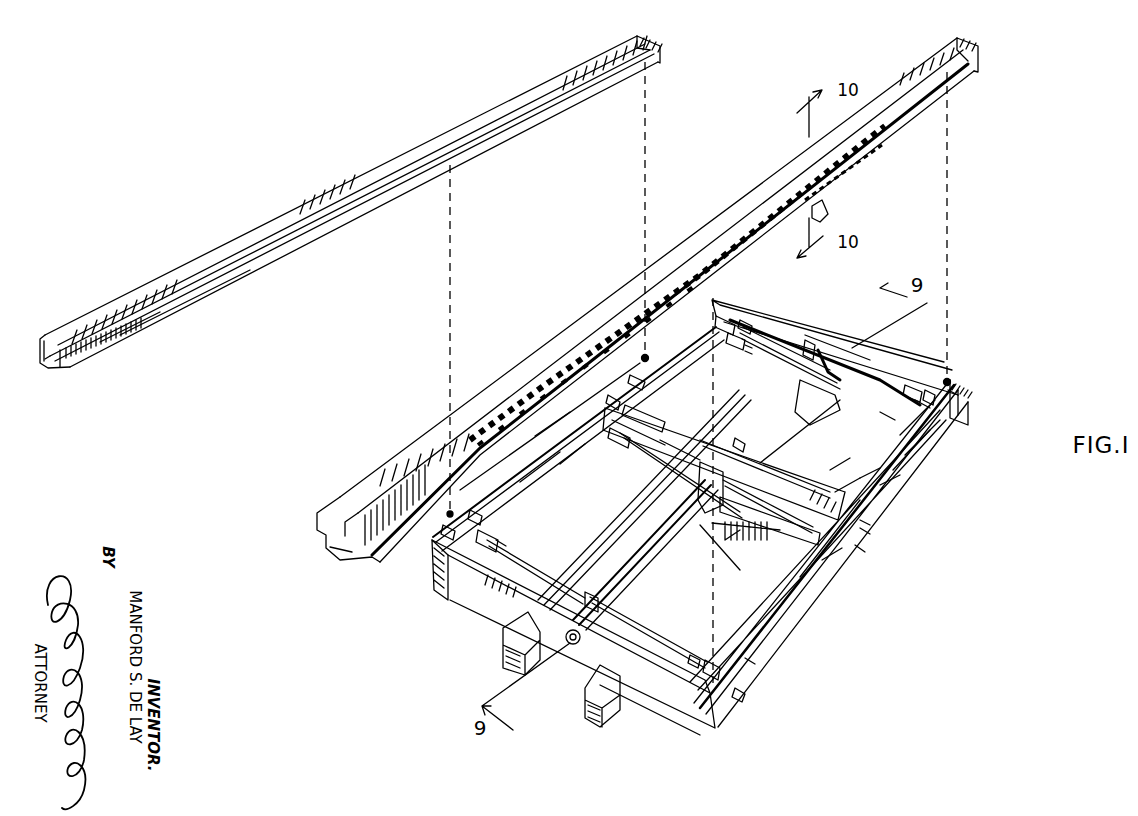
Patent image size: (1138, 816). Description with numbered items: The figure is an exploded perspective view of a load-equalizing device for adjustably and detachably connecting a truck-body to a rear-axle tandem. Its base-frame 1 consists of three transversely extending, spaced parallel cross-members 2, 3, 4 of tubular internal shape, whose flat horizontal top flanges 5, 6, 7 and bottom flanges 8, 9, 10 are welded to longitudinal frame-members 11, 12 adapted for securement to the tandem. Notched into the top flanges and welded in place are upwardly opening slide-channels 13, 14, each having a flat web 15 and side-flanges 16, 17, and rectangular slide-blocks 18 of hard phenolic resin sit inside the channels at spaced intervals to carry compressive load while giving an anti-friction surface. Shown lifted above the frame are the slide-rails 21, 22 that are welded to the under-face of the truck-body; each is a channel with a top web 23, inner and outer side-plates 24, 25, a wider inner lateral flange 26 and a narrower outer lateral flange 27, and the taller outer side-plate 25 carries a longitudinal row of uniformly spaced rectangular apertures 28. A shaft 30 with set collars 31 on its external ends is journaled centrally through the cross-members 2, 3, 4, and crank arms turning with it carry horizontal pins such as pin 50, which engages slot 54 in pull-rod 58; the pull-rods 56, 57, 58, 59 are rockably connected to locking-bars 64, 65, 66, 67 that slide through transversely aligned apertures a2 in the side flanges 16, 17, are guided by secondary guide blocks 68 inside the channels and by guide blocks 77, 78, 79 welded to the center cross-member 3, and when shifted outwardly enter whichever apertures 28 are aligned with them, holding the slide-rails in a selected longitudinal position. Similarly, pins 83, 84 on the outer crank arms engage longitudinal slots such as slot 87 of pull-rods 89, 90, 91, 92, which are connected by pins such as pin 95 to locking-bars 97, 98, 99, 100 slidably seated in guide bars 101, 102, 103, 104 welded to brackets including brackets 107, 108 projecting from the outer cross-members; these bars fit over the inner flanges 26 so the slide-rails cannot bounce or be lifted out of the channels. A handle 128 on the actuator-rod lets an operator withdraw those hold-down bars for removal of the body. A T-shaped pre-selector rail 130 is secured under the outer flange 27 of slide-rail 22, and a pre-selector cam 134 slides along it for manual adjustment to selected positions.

The base-frame 1 is at (785, 321).
The cross-member 2 is at (442, 584).
The cross-member 3 is at (645, 448).
The cross-member 4 is at (783, 349).
The top flange 5 is at (528, 584).
The top flange 6 is at (685, 435).
The top flange 7 is at (840, 347).
The bottom flange 8 is at (670, 713).
The bottom flange 9 is at (773, 523).
The bottom flange 10 is at (883, 412).
The longitudinal frame-member 11 is at (500, 640).
The longitudinal frame-member 12 is at (597, 733).
The slide-channel 13 is at (520, 468).
The slide-channel 14 is at (793, 622).
The web 15 is at (543, 464).
The side-flange 16 is at (565, 452).
The side-flange 17 is at (545, 430).
The slide-block 18 is at (613, 400).
The slide-rail 21 is at (511, 101).
The slide-rail 22 is at (970, 58).
The top web 23 is at (333, 197).
The inner side-plate 24 is at (245, 280).
The outer side-plate 25 is at (337, 548).
The inner lateral flange 26 is at (145, 327).
The outer lateral flange 27 is at (60, 345).
The apertures 28 is at (790, 204).
The shaft 30 is at (662, 548).
The set collars 31 is at (575, 645).
The horizontal pin 50 is at (737, 440).
The slot 54 is at (743, 420).
The pull-rod 56 is at (663, 467).
The pull-rod 57 is at (760, 557).
The pull-rod 58 is at (668, 420).
The pull-rod 59 is at (840, 468).
The locking-bar 64 is at (627, 438).
The locking-bar 65 is at (783, 532).
The locking-bar 66 is at (655, 410).
The locking-bar 67 is at (847, 488).
The secondary guide blocks 68 is at (890, 481).
The guide block 77 is at (580, 416).
The guide block 78 is at (637, 378).
The guide block 79 is at (870, 473).
The horizontal pin 83 is at (810, 340).
The horizontal pin 84 is at (833, 393).
The longitudinal slot 87 is at (823, 355).
The pull-rod 89 is at (513, 557).
The pull-rod 90 is at (630, 617).
The pull-rod 91 is at (760, 332).
The pull-rod 92 is at (873, 370).
The pin 95 is at (748, 349).
The locking-bar 97 is at (500, 545).
The locking-bar 98 is at (697, 655).
The locking-bar 99 is at (748, 328).
The locking-bar 100 is at (913, 383).
The guide bar 101 is at (487, 537).
The guide bar 102 is at (712, 667).
The guide bar 103 is at (722, 318).
The guide bar 104 is at (930, 393).
The bracket 107 is at (740, 335).
The bracket 108 is at (920, 403).
The handle 128 is at (747, 697).
The pre-selector rail 130 is at (862, 158).
The pre-selector cam 134 is at (828, 214).
The rectangular aperture a2 is at (867, 523).